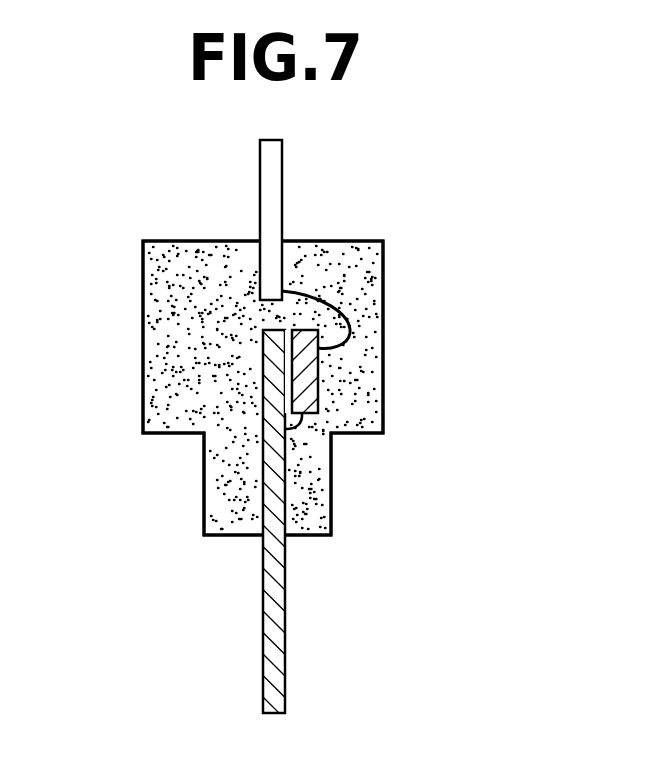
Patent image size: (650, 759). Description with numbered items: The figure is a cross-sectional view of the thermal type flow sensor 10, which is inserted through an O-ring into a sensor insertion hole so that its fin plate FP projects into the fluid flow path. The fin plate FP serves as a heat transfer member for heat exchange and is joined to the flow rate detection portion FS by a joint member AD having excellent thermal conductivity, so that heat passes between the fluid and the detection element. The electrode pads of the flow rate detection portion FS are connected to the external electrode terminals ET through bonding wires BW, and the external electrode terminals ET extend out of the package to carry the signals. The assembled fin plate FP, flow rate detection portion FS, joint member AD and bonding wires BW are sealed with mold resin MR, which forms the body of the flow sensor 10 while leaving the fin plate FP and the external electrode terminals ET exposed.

The flow sensor 10 is at (164, 228).
The external electrode terminals ET is at (283, 179).
The bonding wires BW is at (343, 307).
The flow rate detection portion FS is at (318, 377).
The joint member AD is at (293, 432).
The mold resin MR is at (168, 381).
The fin plate FP is at (287, 639).